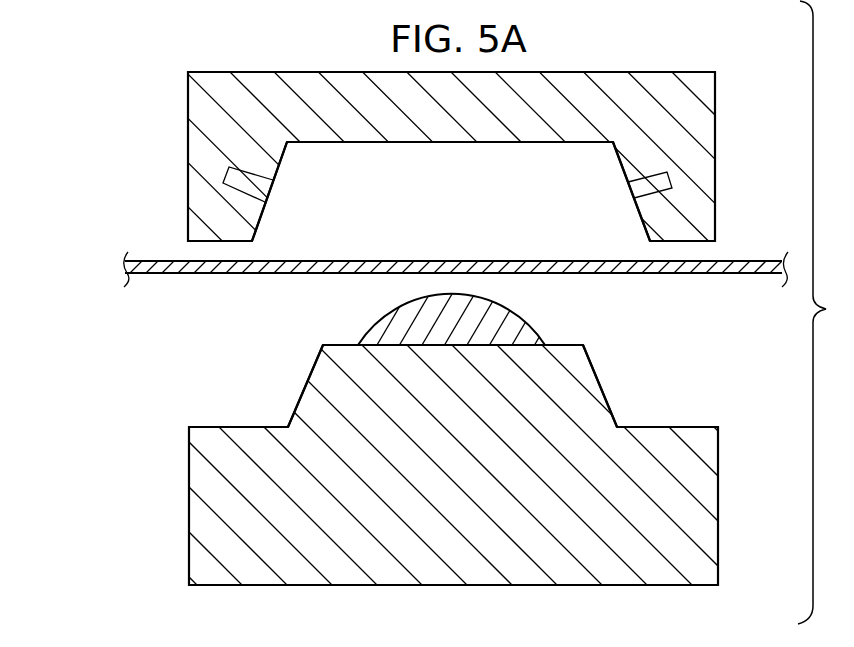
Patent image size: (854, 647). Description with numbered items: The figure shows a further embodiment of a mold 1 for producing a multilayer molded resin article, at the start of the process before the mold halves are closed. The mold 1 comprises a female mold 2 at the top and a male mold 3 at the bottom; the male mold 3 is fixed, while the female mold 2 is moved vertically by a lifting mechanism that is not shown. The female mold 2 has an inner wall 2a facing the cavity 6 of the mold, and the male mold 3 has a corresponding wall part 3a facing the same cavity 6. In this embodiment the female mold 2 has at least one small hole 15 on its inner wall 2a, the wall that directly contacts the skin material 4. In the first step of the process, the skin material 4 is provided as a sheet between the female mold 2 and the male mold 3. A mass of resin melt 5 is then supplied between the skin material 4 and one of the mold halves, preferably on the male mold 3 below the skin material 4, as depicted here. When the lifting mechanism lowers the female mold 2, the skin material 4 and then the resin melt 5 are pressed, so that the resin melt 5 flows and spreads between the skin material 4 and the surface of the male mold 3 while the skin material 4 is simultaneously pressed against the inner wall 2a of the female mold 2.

The mold 1 is at (120, 214).
The female mold 2 is at (641, 113).
The inner wall 2a is at (262, 217).
The male mold 3 is at (708, 527).
The wall part 3a is at (327, 349).
The skin material 4 is at (750, 277).
The resin melt 5 is at (389, 324).
The cavity 6 is at (458, 228).
The small hole 15 is at (233, 182).